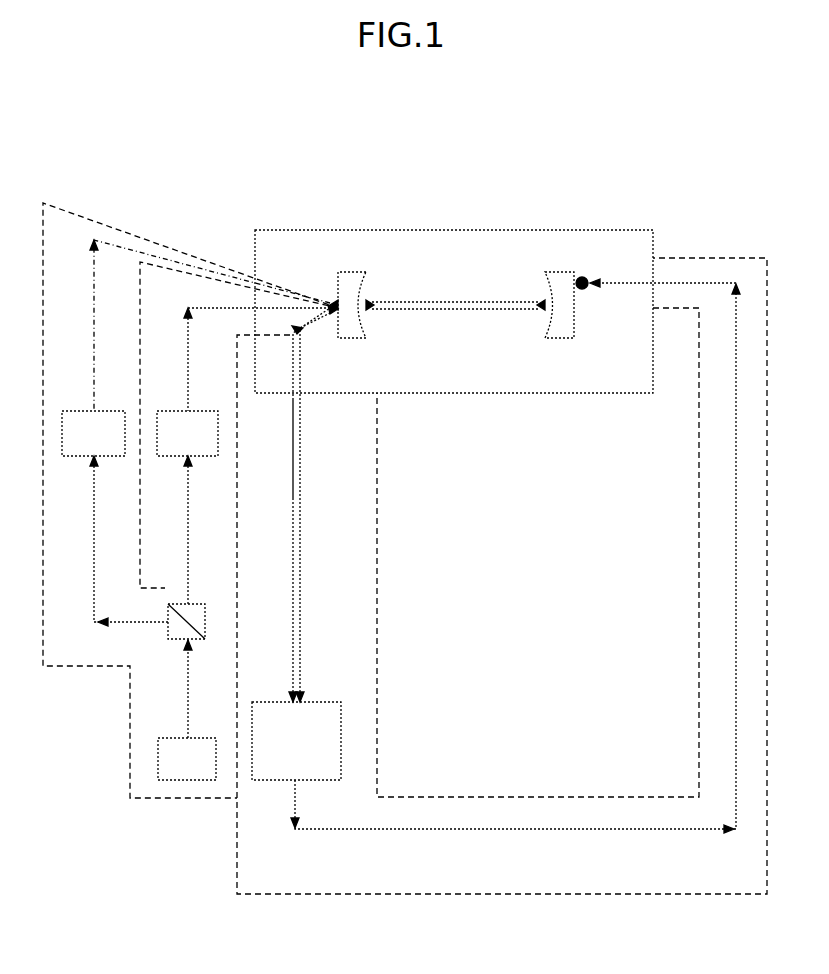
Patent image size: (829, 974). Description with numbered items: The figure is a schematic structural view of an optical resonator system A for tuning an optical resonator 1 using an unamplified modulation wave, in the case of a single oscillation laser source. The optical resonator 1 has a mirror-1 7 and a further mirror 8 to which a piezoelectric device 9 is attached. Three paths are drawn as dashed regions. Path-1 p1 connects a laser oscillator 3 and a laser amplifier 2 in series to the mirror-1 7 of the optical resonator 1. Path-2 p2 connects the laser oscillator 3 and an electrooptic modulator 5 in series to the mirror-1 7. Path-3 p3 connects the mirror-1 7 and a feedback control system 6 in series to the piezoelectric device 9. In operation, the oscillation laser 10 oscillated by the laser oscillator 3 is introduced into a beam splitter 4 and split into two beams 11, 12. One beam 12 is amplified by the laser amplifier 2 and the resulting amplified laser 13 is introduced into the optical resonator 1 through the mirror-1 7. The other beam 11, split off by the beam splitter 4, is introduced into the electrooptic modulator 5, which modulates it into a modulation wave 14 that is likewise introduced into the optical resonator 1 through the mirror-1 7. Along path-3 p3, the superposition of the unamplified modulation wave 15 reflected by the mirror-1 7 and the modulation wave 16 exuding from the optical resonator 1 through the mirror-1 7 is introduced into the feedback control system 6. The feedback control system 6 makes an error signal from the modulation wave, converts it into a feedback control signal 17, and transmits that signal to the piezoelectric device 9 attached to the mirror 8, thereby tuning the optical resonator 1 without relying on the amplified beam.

The optical resonator system A is at (437, 176).
The optical resonator 1 is at (454, 311).
The laser amplifier 2 is at (187, 433).
The laser oscillator 3 is at (187, 759).
The beam splitter 4 is at (195, 621).
The electrooptic modulator 5 is at (93, 433).
The feedback control system 6 is at (296, 741).
The mirror-1 7 is at (352, 317).
The mirror 8 is at (474, 317).
The piezoelectric device 9 is at (588, 269).
The oscillation laser 10 is at (188, 665).
The beam 11 is at (138, 622).
The beam 12 is at (188, 518).
The amplified laser 13 is at (235, 308).
The modulation wave 14 is at (108, 240).
The unamplified modulation wave 15 is at (290, 452).
The modulation wave 16 is at (300, 548).
The feedback control signal 17 is at (513, 832).
The path-1 p1 is at (157, 288).
The path-2 p2 is at (143, 725).
The path-3 p3 is at (440, 878).